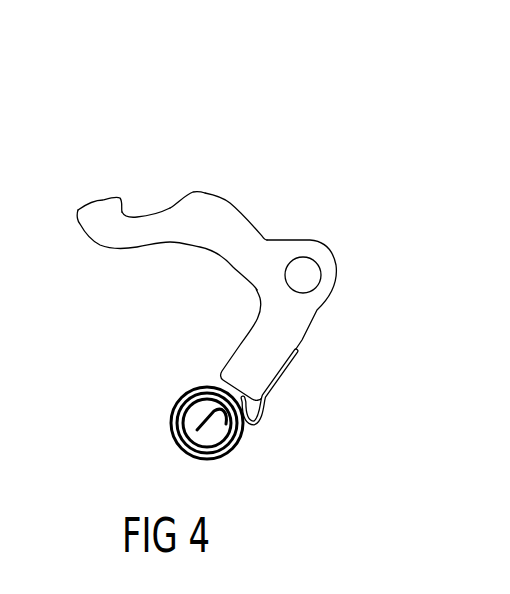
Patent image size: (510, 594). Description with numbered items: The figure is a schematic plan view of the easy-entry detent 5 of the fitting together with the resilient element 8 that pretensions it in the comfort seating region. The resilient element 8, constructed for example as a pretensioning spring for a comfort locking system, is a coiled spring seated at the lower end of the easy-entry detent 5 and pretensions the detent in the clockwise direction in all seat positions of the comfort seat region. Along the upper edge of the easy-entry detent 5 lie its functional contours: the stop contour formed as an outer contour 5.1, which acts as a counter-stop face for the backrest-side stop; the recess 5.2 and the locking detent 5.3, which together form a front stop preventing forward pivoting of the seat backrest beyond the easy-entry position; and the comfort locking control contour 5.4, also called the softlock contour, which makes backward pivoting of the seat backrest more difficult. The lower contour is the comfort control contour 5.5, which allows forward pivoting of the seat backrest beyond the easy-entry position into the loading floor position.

The easy-entry detent 5 is at (225, 247).
The outer contour 5.1 is at (215, 197).
The recess 5.2 is at (148, 205).
The locking detent 5.3 is at (97, 211).
The control contour 5.4 is at (177, 197).
The comfort control contour 5.5 is at (232, 268).
The resilient element 8 is at (240, 440).